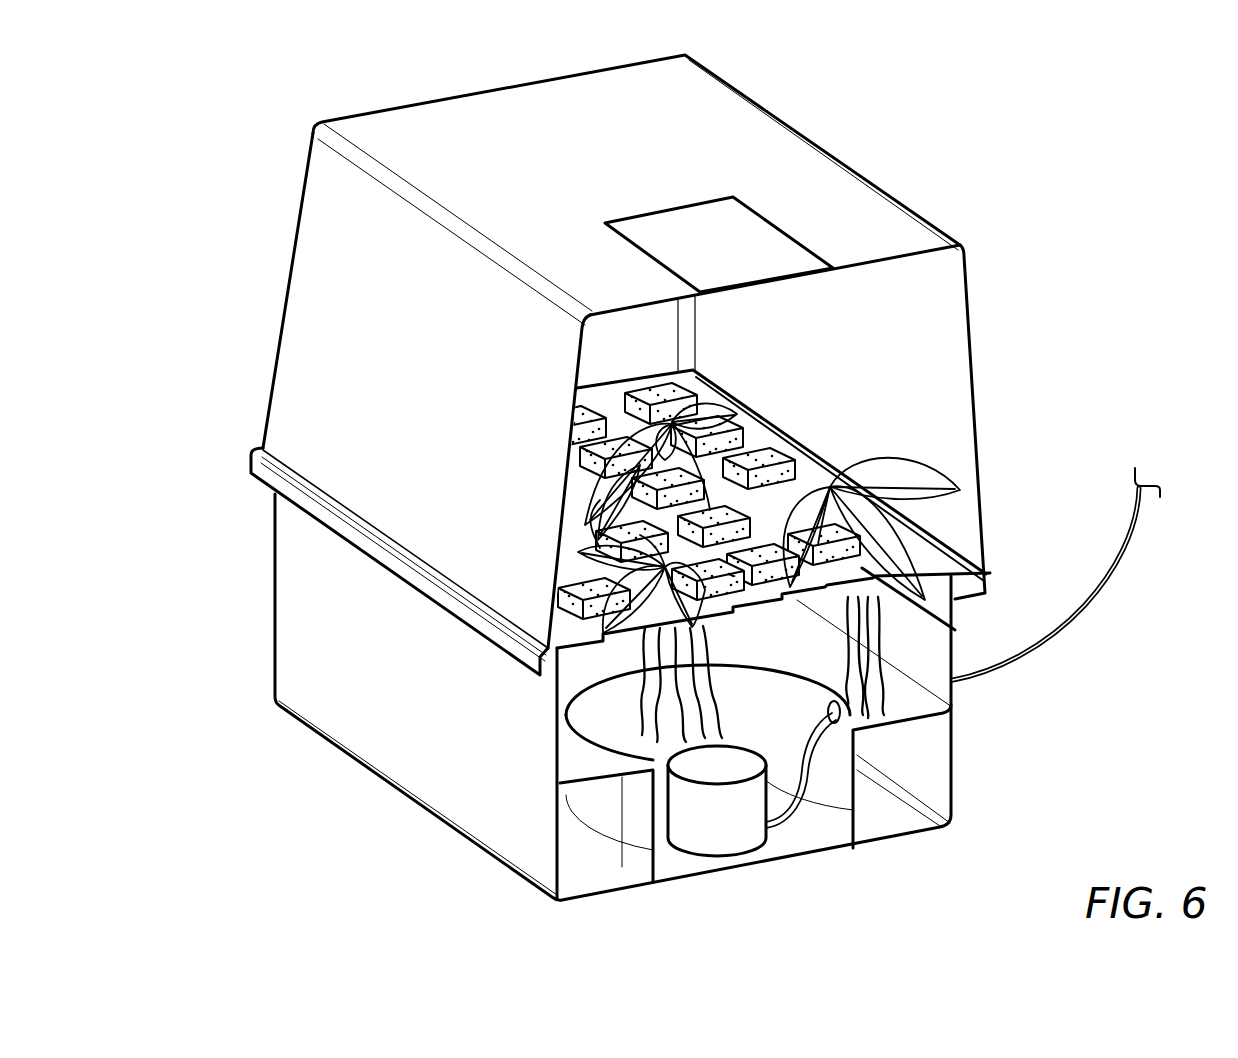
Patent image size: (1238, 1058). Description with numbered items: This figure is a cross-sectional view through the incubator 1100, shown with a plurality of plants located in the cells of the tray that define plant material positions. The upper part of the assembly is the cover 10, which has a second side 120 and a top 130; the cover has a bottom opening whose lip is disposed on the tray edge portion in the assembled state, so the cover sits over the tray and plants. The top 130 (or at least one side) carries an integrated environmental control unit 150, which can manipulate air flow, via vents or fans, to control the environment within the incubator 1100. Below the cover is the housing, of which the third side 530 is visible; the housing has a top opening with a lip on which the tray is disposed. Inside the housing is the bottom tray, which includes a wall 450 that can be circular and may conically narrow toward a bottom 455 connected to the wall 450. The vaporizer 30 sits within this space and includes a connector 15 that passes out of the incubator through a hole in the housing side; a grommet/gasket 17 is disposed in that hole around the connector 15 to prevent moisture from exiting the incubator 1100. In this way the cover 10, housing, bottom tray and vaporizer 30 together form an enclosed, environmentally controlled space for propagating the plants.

The incubator 1100 is at (356, 47).
The cover 10 is at (1030, 361).
The second side 120 is at (333, 262).
The top 130 is at (662, 117).
The environmental control unit 150 is at (735, 232).
The third side 530 is at (322, 610).
The wall 450 is at (823, 780).
The bottom 455 is at (805, 835).
The vaporizer 30 is at (689, 858).
The grommet/gasket 17 is at (840, 712).
The connector 15 is at (1097, 575).